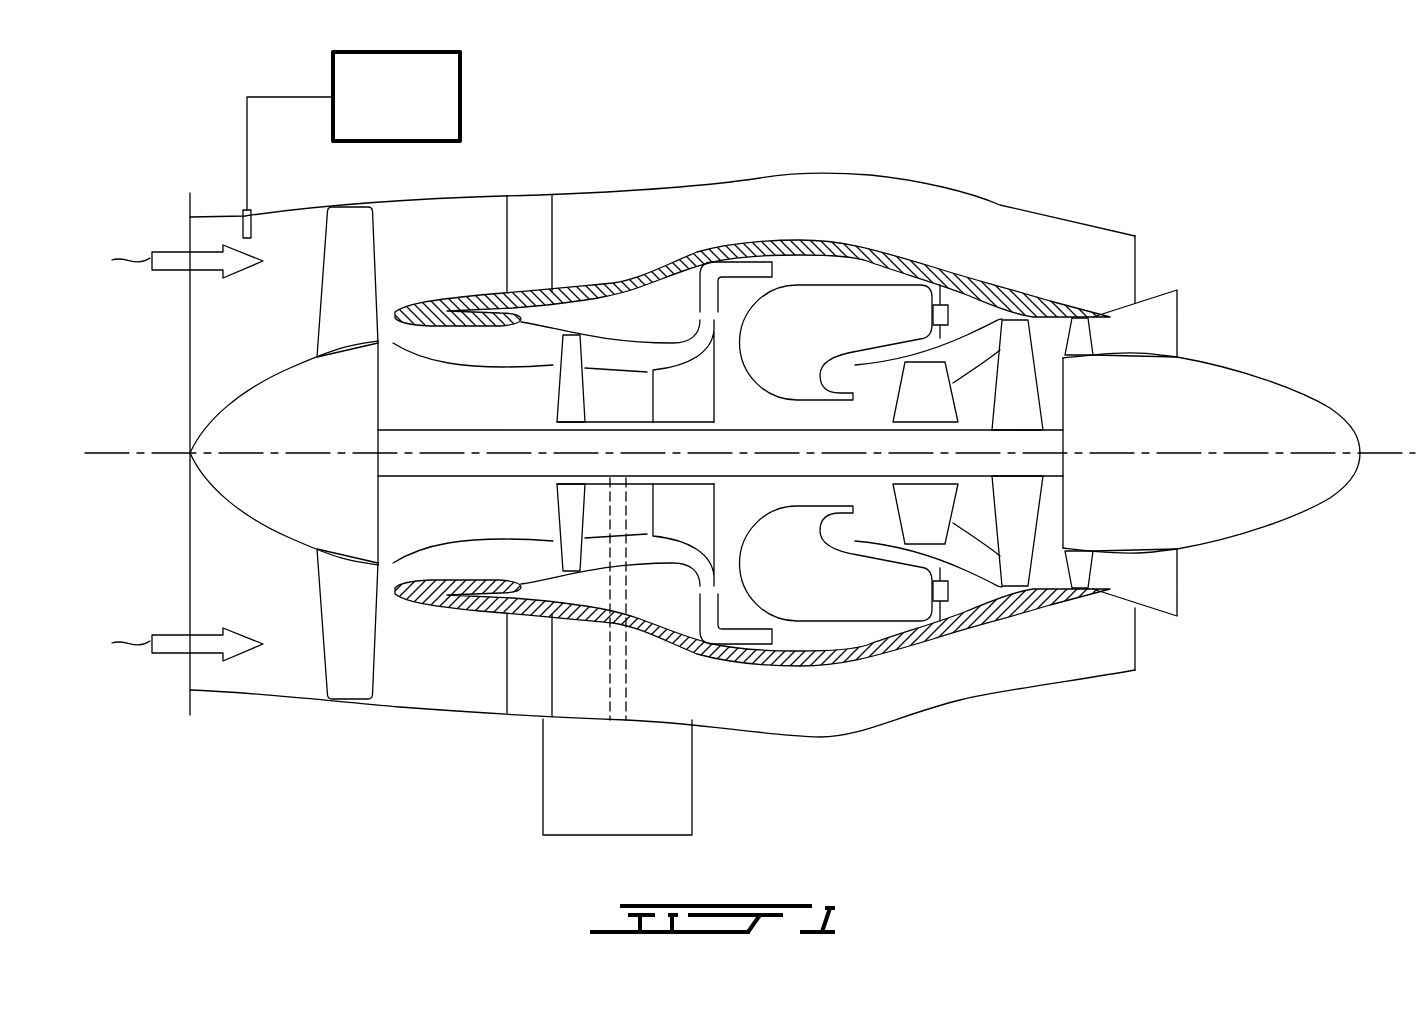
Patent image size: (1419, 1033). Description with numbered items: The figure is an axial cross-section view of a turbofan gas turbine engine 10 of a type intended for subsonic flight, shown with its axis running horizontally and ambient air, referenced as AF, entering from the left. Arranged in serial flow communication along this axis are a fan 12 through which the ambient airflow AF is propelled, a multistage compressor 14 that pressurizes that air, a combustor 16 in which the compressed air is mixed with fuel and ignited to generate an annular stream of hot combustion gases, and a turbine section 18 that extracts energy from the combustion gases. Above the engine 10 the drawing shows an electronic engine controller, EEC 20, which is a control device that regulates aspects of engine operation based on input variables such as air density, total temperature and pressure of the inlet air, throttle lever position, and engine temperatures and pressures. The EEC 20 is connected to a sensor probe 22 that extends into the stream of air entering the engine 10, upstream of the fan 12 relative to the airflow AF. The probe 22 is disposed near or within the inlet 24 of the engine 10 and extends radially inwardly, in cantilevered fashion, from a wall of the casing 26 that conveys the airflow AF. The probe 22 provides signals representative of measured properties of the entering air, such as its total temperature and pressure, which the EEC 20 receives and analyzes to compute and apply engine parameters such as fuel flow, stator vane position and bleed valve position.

The gas turbine engine 10 is at (943, 170).
The fan 12 is at (343, 605).
The multistage compressor 14 is at (622, 352).
The combustor 16 is at (835, 305).
The turbine section 18 is at (972, 522).
The electronic engine controller (EEC) 20 is at (462, 97).
The sensor probe 22 is at (243, 225).
The inlet 24 is at (212, 333).
The casing 26 is at (396, 200).